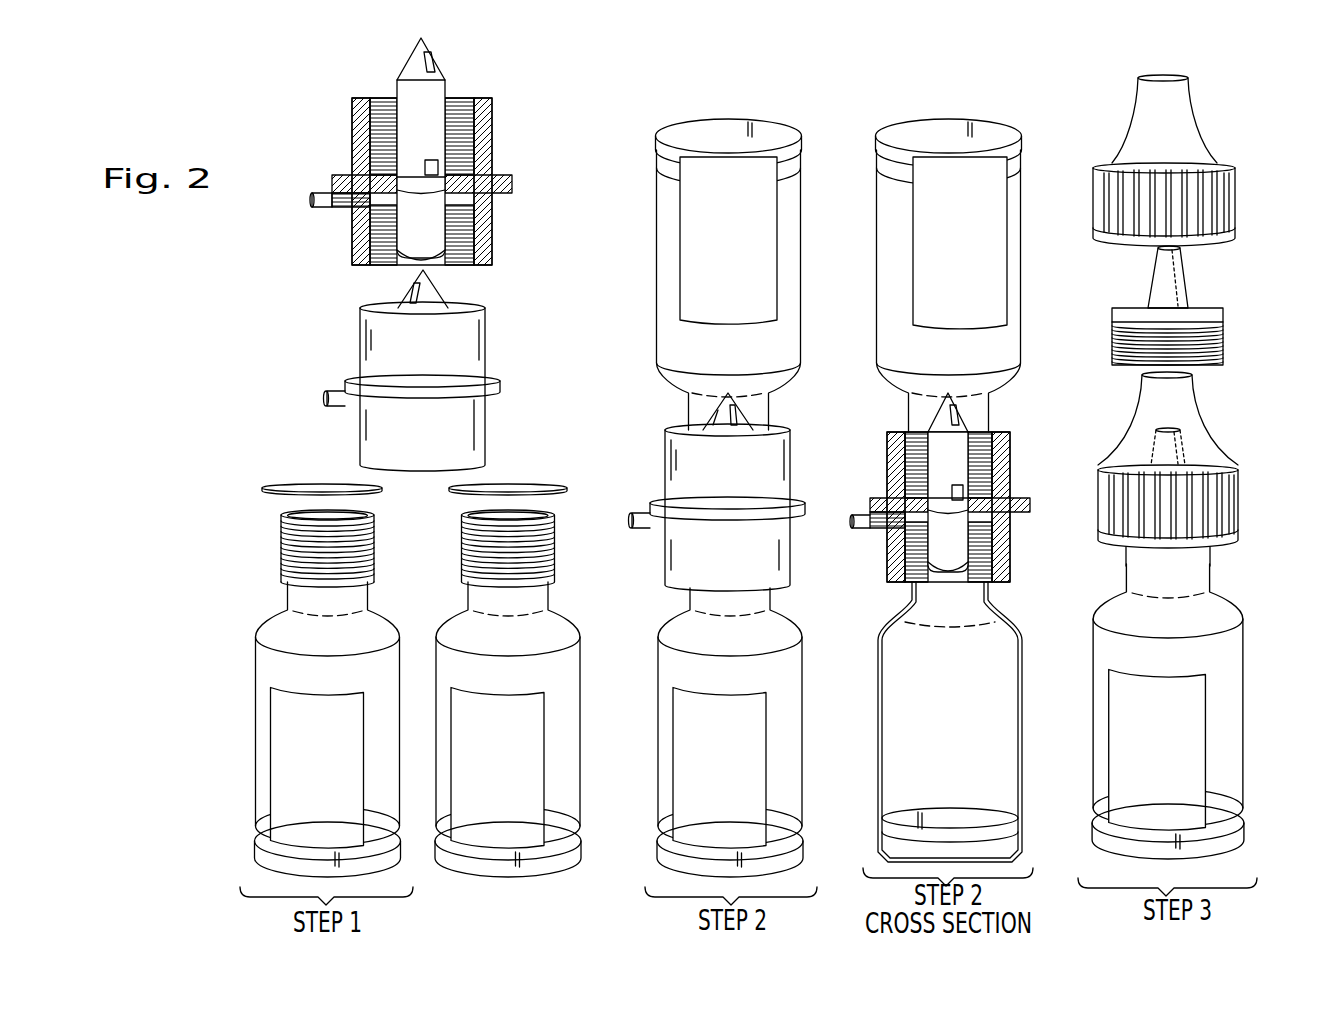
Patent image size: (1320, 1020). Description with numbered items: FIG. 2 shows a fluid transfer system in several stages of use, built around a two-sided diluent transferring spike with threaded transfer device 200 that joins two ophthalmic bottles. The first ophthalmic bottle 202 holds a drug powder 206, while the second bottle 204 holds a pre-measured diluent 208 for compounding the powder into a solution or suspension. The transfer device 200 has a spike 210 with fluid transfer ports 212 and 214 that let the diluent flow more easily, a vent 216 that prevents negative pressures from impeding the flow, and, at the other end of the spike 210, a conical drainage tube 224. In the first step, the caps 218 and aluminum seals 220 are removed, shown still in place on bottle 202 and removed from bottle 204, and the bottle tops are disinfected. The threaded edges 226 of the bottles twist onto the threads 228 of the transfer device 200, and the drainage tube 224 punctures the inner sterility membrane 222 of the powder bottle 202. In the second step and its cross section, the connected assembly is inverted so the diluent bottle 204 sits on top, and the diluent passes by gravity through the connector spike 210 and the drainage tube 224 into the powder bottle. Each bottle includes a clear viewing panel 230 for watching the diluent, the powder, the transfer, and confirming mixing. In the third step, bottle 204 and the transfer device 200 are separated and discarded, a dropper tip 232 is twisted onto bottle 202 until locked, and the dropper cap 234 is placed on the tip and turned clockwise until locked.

The transfer device 200 is at (278, 92).
The first ophthalmic bottle 202 is at (250, 716).
The second bottle 204 is at (566, 618).
The drug powder 206 is at (251, 775).
The diluent 208 is at (802, 273).
The spike 210 is at (447, 78).
The fluid transfer port 212 is at (434, 62).
The fluid transfer port 214 is at (512, 184).
The vent 216 is at (322, 208).
The cap 218 is at (451, 491).
The aluminum seal 220 is at (280, 518).
The inner sterility membrane 222 is at (281, 546).
The drainage tube 224 is at (440, 262).
The threaded edges 226 is at (372, 558).
The threads 228 is at (492, 238).
The clear viewing panel 230 is at (262, 835).
The dropper tip 232 is at (1192, 294).
The dropper cap 234 is at (1209, 119).